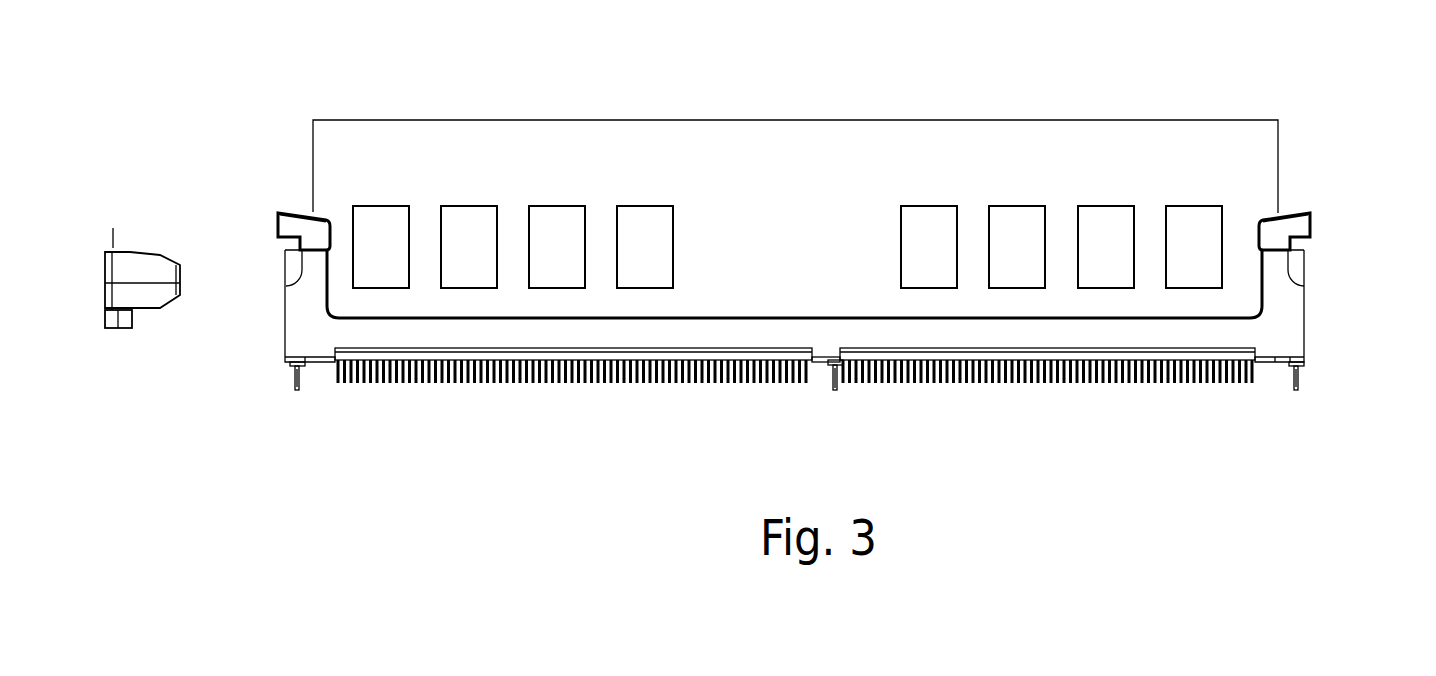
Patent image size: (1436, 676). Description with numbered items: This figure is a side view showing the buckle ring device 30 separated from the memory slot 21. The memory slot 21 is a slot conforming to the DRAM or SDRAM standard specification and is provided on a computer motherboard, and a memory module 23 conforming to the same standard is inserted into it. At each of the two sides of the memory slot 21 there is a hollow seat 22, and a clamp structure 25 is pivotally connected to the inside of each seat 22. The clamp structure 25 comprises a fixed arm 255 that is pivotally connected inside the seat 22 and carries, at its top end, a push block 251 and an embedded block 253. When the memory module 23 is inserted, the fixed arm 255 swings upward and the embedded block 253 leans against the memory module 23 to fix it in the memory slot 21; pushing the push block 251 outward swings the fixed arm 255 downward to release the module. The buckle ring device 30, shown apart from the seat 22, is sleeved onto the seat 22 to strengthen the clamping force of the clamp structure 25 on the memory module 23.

The memory slot 21 is at (822, 340).
The seat 22 is at (313, 335).
The memory module 23 is at (793, 170).
The clamp structure 25 is at (794, 203).
The push block 251 is at (291, 212).
The embedded block 253 is at (313, 218).
The fixed arm 255 is at (797, 252).
The buckle ring device 30 is at (110, 248).